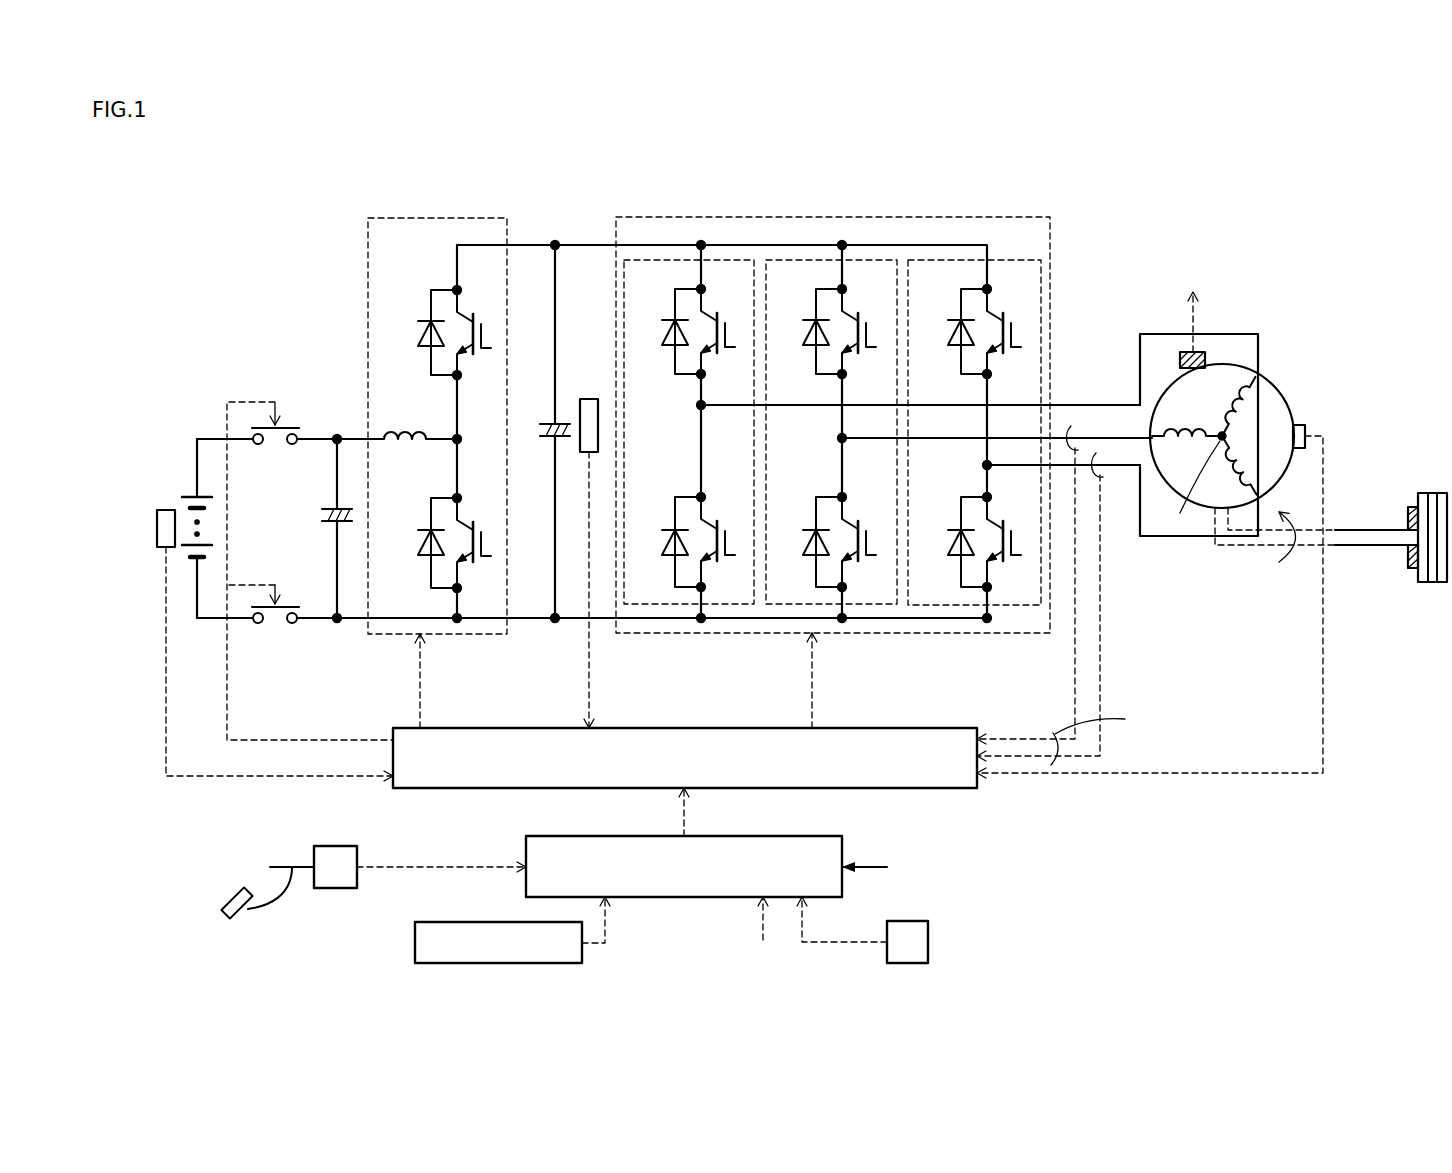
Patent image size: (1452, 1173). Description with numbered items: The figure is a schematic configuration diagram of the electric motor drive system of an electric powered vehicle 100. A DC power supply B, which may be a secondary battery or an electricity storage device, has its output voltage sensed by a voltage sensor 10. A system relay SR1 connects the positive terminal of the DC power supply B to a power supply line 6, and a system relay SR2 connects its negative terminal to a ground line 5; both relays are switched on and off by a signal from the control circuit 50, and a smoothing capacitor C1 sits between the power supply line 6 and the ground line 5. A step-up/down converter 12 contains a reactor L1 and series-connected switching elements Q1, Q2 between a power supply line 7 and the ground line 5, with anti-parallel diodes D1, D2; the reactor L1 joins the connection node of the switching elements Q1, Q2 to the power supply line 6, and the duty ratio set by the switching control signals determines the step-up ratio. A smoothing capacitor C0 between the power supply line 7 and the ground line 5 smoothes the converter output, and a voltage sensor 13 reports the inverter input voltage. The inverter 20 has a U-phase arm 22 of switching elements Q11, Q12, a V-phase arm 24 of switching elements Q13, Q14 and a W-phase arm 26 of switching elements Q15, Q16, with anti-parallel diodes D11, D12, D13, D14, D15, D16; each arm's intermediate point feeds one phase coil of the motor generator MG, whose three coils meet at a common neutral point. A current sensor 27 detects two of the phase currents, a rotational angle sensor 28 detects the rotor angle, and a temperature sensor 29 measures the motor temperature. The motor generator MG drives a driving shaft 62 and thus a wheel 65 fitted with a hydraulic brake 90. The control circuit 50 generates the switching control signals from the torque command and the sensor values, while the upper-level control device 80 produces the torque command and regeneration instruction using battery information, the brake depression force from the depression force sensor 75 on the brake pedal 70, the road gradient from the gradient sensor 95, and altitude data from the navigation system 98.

The electric powered vehicle 100 is at (580, 156).
The voltage sensor 10 is at (158, 508).
The DC power supply B is at (185, 494).
The system relay SR1 is at (292, 427).
The system relay SR2 is at (292, 606).
The smoothing capacitor C1 is at (330, 508).
The power supply line 6 is at (344, 437).
The step-up/down converter 12 is at (437, 218).
The reactor L1 is at (405, 428).
The power semiconductor switching element Q1 is at (476, 323).
The power semiconductor switching element Q2 is at (476, 533).
The anti-parallel diode D1 is at (422, 332).
The anti-parallel diode D2 is at (421, 543).
The power supply line 7 is at (586, 245).
The ground line 5 is at (524, 622).
The smoothing capacitor C0 is at (549, 422).
The voltage sensor 13 is at (589, 399).
The inverter 20 is at (871, 217).
The U-phase arm 22 is at (647, 260).
The V-phase arm 24 is at (797, 260).
The W-phase arm 26 is at (951, 260).
The switching element Q11 is at (725, 322).
The switching element Q12 is at (725, 536).
The switching element Q13 is at (866, 322).
The switching element Q14 is at (866, 536).
The switching element Q15 is at (1011, 322).
The switching element Q16 is at (1011, 536).
The anti-parallel diode D11 is at (666, 331).
The anti-parallel diode D12 is at (665, 542).
The anti-parallel diode D13 is at (807, 331).
The anti-parallel diode D14 is at (806, 542).
The anti-parallel diode D15 is at (952, 331).
The anti-parallel diode D16 is at (951, 542).
The current sensor 27 is at (1076, 424).
The motor generator MG is at (1284, 396).
The temperature sensor 29 is at (1206, 355).
The rotational angle sensor 28 is at (1306, 422).
The driving shaft 62 is at (1387, 546).
The hydraulic brake 90 is at (1412, 505).
The wheel 65 is at (1433, 583).
The control circuit 50 is at (693, 728).
The control device 80 is at (681, 897).
The brake pedal 70 is at (236, 893).
The depression force sensor 75 is at (337, 846).
The navigation system 98 is at (415, 943).
The gradient sensor 95 is at (928, 943).